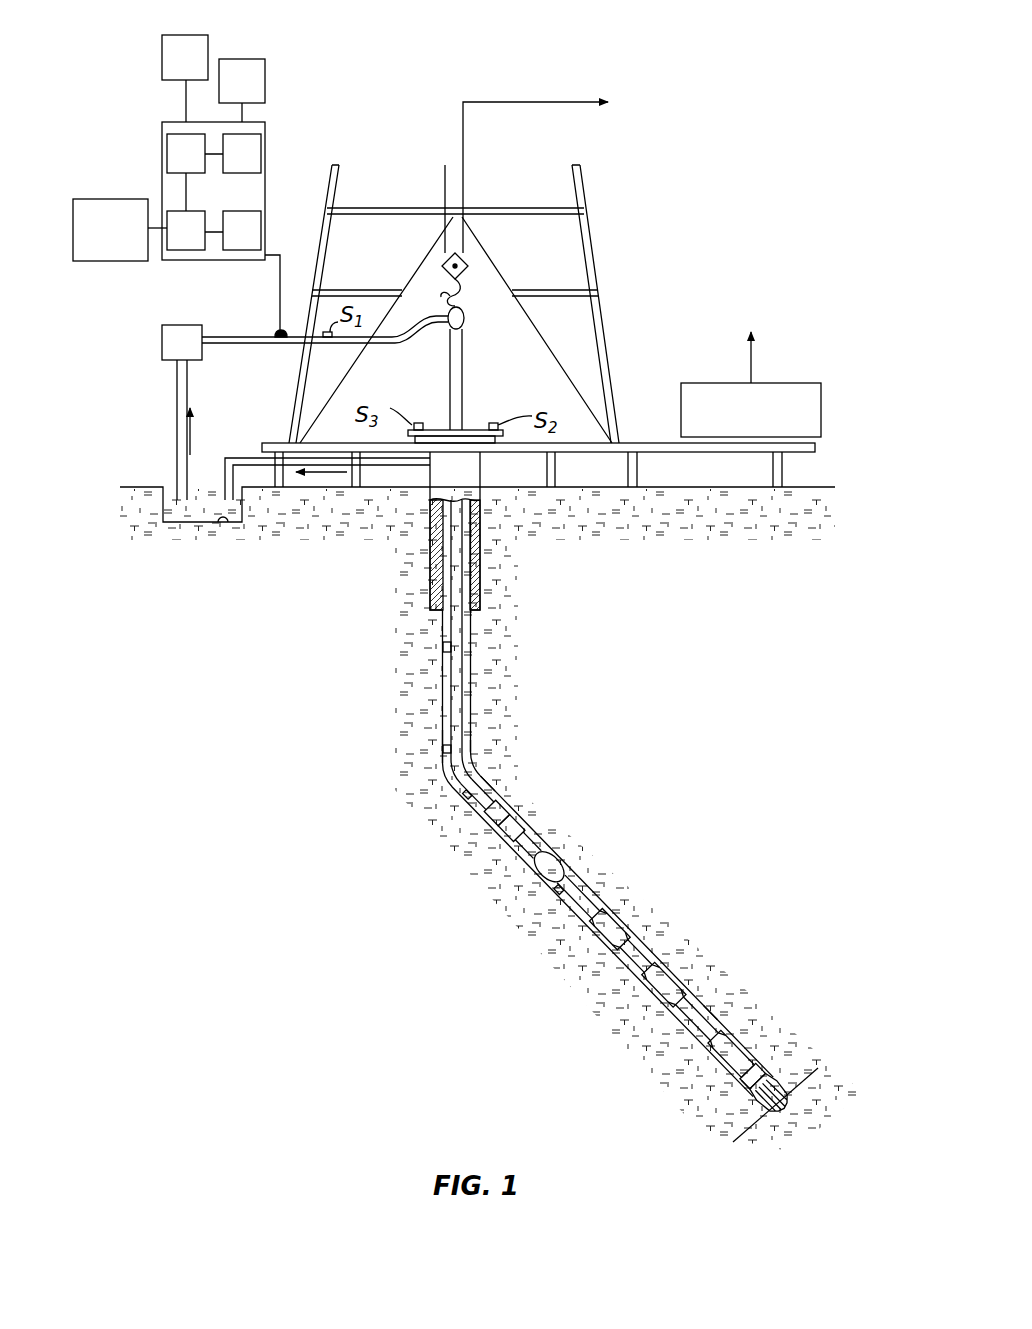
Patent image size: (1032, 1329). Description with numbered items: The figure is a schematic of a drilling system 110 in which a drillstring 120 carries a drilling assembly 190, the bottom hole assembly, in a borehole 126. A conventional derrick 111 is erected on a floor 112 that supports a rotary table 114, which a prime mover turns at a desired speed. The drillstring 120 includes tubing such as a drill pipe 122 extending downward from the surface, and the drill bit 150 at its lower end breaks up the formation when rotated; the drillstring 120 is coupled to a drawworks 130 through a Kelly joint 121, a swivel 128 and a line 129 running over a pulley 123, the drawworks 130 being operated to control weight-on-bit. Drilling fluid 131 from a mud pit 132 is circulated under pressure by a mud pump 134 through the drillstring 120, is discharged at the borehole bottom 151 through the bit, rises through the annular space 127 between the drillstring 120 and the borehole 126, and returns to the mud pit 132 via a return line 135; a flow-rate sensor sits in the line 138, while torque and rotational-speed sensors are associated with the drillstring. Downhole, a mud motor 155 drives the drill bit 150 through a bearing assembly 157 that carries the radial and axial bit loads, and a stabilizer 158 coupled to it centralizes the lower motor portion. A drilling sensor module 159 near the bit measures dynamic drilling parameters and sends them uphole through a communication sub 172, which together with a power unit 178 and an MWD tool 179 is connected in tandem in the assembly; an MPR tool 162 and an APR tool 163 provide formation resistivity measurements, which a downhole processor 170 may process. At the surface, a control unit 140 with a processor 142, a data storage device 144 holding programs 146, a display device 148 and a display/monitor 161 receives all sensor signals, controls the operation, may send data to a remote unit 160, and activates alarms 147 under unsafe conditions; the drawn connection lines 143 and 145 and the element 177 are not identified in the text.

The drilling system 110 is at (377, 117).
The derrick 111 is at (597, 307).
The floor 112 is at (618, 443).
The rotary table 114 is at (470, 430).
The drillstring 120 is at (467, 695).
The Kelly joint 121 is at (462, 376).
The drill pipe 122 is at (442, 673).
The pulley 123 is at (457, 266).
The borehole 126 is at (474, 774).
The annular space 127 is at (488, 804).
The swivel 128 is at (446, 322).
The line 129 is at (465, 190).
The drawworks 130 is at (800, 383).
The drilling fluid 131 is at (175, 508).
The mud pit 132 is at (223, 522).
The mud pump 134 is at (170, 325).
The return line 135 is at (400, 465).
The line 138 is at (270, 344).
The surface control unit 140 is at (168, 122).
The processor 142 is at (167, 154).
The sensor 143 is at (280, 332).
The data storage device 144 is at (175, 211).
The signal line 145 is at (280, 257).
The computer programs 146 is at (253, 211).
The alarms 147 is at (131, 262).
The display device 148 is at (262, 154).
The drill bit 150 is at (788, 1082).
The borehole bottom 151 is at (752, 1133).
The downhole motor 155 is at (640, 950).
The bearing assembly 157 is at (744, 1040).
The stabilizer 158 is at (758, 1053).
The drilling sensor module 159 is at (745, 1090).
The remote unit 160 is at (168, 35).
The display/monitor 161 is at (252, 59).
The multiple propagation resistivity (MPR) tool 162 is at (712, 1012).
The azimuthal propagation resistivity (APR) tool 163 is at (670, 982).
The downhole processor 170 is at (637, 980).
The communication sub 172 is at (445, 773).
The stabilizer 177 is at (525, 875).
The power unit 178 is at (470, 813).
The MWD tool 179 is at (484, 832).
The drilling assembly 190 is at (648, 855).